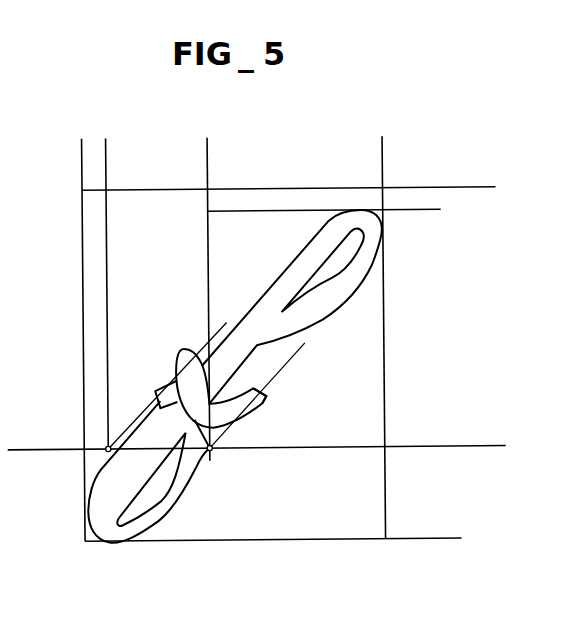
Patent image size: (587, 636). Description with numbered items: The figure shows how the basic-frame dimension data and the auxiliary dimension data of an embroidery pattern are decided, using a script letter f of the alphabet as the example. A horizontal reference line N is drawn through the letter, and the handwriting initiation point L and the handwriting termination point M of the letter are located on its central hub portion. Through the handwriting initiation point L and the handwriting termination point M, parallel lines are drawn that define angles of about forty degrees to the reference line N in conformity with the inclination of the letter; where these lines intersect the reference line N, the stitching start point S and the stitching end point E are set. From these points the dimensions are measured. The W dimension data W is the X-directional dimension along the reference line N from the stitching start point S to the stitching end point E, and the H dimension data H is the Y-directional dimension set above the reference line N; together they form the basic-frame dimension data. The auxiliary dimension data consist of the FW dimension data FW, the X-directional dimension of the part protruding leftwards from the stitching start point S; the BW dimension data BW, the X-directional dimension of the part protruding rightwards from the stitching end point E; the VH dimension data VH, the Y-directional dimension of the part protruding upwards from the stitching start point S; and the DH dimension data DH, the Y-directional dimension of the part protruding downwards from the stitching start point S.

The FW dimension data FW is at (50, 143).
The W dimension data W is at (209, 143).
The BW dimension data BW is at (384, 143).
The H dimension data H is at (486, 188).
The VH dimension data VH is at (440, 210).
The DH dimension data DH is at (440, 447).
The reference line N is at (330, 447).
The stitching start point S is at (105, 450).
The stitching end point E is at (210, 450).
The handwriting initiation point L is at (152, 396).
The handwriting termination point M is at (264, 393).